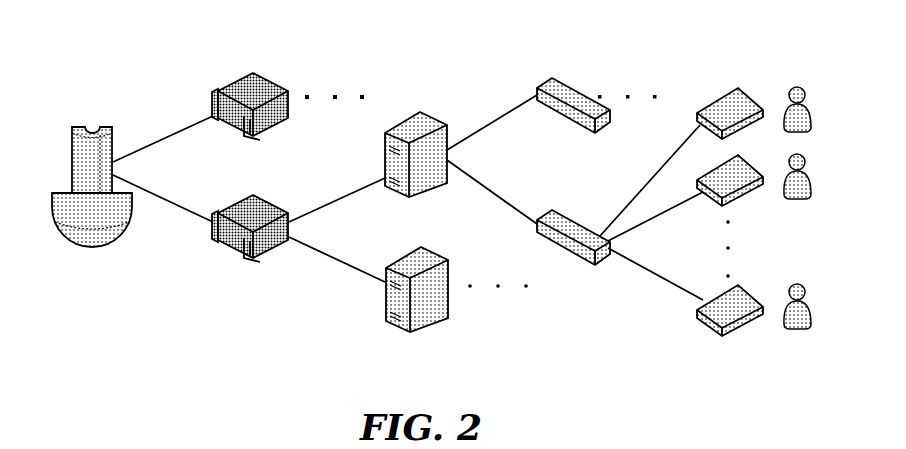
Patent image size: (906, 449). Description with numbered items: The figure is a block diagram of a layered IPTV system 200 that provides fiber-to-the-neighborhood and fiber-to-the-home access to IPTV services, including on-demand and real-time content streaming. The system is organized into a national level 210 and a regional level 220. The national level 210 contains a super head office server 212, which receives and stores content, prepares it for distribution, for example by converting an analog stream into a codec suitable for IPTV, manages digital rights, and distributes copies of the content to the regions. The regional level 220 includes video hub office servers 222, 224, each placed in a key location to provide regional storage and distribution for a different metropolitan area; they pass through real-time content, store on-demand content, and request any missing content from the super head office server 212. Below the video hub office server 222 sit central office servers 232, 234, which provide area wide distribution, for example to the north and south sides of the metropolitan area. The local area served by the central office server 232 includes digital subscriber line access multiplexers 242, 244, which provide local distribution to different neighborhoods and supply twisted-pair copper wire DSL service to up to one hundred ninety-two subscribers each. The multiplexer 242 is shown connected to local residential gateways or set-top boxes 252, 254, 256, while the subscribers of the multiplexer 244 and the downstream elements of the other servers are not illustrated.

The layered IPTV system 200 is at (98, 418).
The national level 210 is at (92, 57).
The super head office server 212 is at (107, 125).
The regional level 220 is at (255, 38).
The video hub office server 222 is at (272, 204).
The video hub office server 224 is at (272, 82).
The central office server 232 is at (436, 118).
The central office server 234 is at (437, 251).
The digital subscriber line access multiplexer 242 is at (558, 210).
The digital subscriber line access multiplexer 244 is at (558, 78).
The residential gateway or set-top box 252 is at (740, 91).
The residential gateway or set-top box 254 is at (740, 158).
The residential gateway or set-top box 256 is at (740, 289).